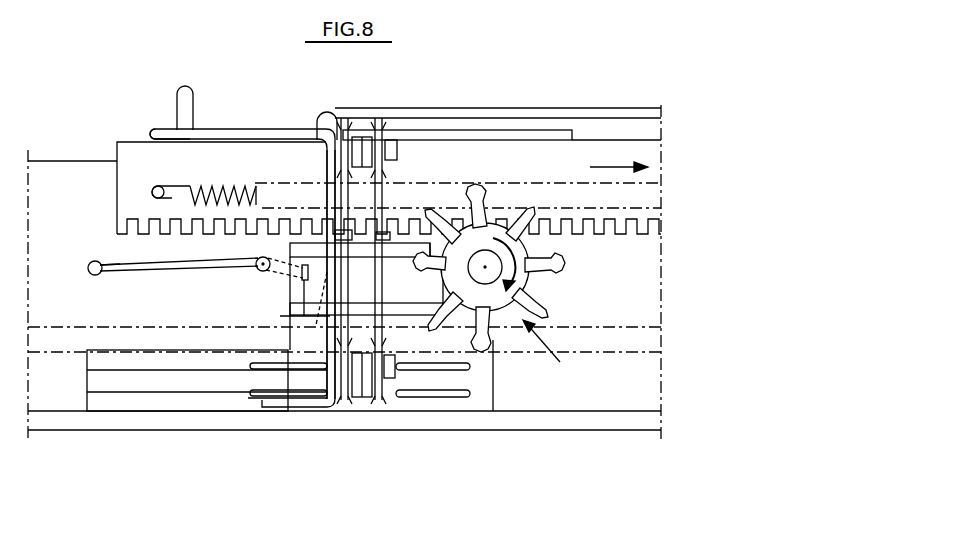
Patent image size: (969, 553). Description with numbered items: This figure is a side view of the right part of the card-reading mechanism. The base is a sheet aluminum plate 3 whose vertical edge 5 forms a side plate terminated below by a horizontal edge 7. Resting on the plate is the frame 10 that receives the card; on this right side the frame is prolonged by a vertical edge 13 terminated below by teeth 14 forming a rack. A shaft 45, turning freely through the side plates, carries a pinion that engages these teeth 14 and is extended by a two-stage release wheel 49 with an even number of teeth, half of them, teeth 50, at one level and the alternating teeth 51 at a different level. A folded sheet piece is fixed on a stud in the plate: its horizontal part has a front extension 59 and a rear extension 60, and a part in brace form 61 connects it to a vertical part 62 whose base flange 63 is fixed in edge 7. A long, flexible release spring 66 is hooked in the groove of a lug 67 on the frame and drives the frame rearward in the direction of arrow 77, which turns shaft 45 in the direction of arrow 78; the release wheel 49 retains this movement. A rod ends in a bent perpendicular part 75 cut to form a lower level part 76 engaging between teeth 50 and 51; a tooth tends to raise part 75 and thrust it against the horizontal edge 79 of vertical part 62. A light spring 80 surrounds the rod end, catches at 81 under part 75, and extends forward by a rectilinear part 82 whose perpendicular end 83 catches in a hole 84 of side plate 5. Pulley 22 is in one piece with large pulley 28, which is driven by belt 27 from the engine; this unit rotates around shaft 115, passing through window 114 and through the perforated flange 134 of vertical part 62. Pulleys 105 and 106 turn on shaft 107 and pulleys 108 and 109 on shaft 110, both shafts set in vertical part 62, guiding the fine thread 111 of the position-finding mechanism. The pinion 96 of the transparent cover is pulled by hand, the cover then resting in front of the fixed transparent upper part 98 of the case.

The plate 3 is at (67, 160).
The vertical edge 5 is at (123, 307).
The horizontal edge 7 is at (148, 421).
The frame 10 is at (632, 139).
The vertical edge 13 is at (243, 160).
The teeth 14 is at (625, 235).
The pulley 22 is at (282, 316).
The belt 27 is at (187, 380).
The large pulley 28 is at (253, 397).
The shaft 45 is at (483, 270).
The two-stage release wheel 49 is at (548, 353).
The teeth 50 is at (484, 196).
The teeth 51 is at (431, 222).
The front extension 59 is at (160, 136).
The rear extension 60 is at (553, 130).
The part in brace form 61 is at (272, 136).
The vertical part 62 is at (330, 190).
The flange 63 is at (283, 407).
The release spring 66 is at (210, 184).
The lug 67 is at (150, 193).
The bent perpendicular part 75 is at (365, 265).
The lower level part 76 is at (396, 268).
The arrow 77 is at (619, 156).
The arrow 78 is at (521, 270).
The horizontal edge 79 is at (313, 310).
The light spring 80 is at (257, 268).
The catch point 81 is at (300, 277).
The rectilinear part 82 is at (166, 265).
The perpendicular end 83 is at (90, 272).
The hole 84 is at (88, 262).
The pinion 96 is at (182, 96).
The fixed transparent upper part 98 is at (509, 108).
The pulley 105 is at (383, 124).
The pulley 106 is at (340, 122).
The shaft 107 is at (396, 148).
The pulley 108 is at (379, 402).
The pulley 109 is at (344, 402).
The shaft 110 is at (392, 380).
The thread 111 is at (347, 190).
The window 114 is at (493, 382).
The shaft 115 is at (347, 232).
The flange 134 is at (386, 234).